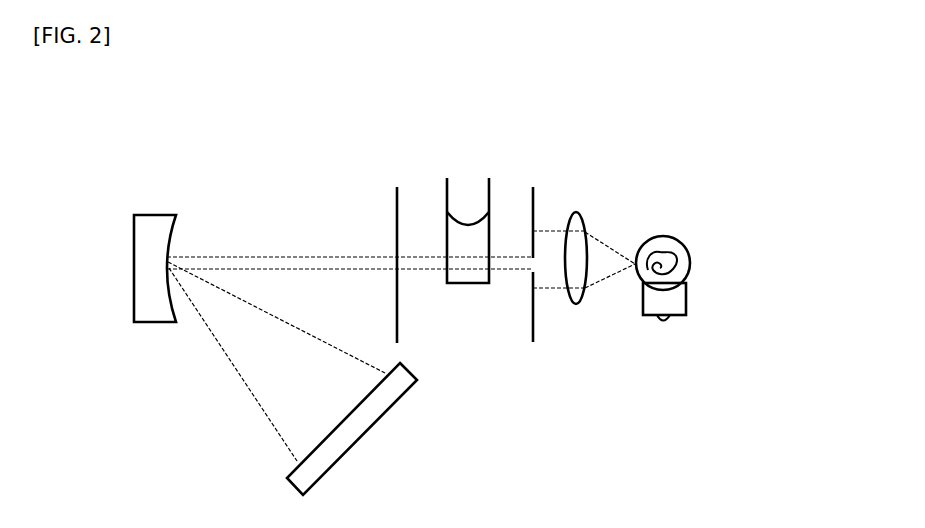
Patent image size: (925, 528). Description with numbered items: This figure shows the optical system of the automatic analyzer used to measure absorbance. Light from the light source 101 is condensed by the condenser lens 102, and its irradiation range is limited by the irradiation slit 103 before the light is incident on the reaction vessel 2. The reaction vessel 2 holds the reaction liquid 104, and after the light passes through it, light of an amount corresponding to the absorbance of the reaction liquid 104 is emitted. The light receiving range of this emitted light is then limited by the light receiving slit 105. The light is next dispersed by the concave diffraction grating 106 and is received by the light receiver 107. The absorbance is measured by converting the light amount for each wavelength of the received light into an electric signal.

The reaction vessel 2 is at (493, 190).
The light source 101 is at (687, 293).
The condenser lens 102 is at (583, 227).
The irradiation slit 103 is at (535, 318).
The reaction liquid 104 is at (467, 225).
The light receiving slit 105 is at (397, 223).
The concave diffraction grating 106 is at (163, 213).
The light receiver 107 is at (410, 390).